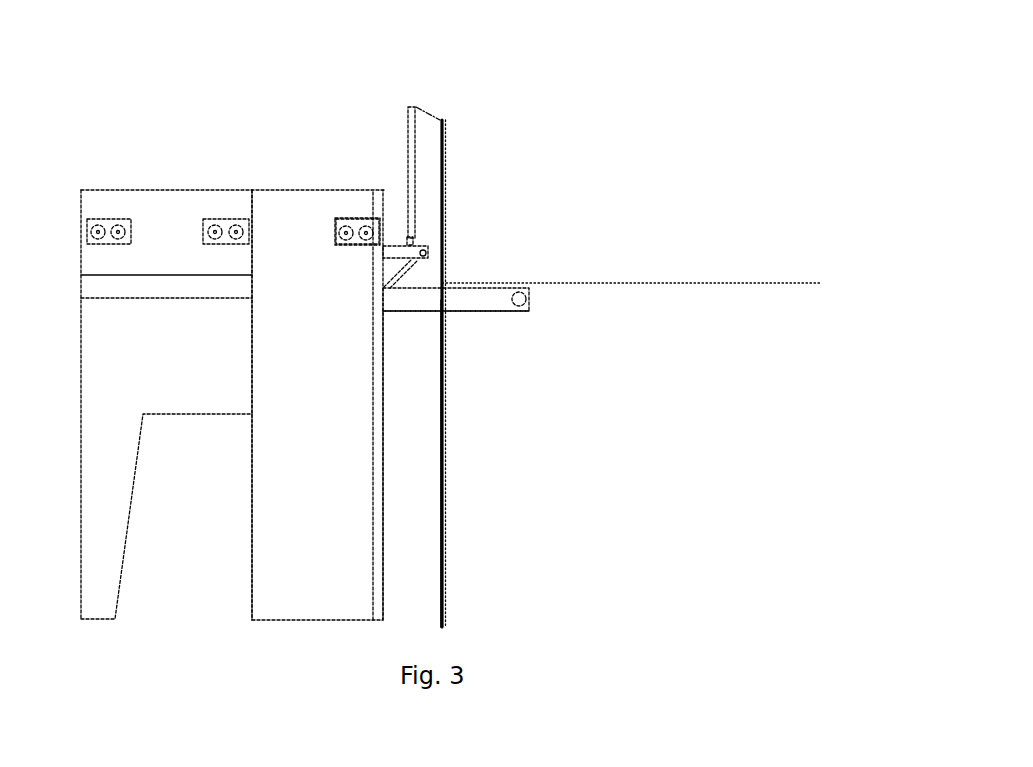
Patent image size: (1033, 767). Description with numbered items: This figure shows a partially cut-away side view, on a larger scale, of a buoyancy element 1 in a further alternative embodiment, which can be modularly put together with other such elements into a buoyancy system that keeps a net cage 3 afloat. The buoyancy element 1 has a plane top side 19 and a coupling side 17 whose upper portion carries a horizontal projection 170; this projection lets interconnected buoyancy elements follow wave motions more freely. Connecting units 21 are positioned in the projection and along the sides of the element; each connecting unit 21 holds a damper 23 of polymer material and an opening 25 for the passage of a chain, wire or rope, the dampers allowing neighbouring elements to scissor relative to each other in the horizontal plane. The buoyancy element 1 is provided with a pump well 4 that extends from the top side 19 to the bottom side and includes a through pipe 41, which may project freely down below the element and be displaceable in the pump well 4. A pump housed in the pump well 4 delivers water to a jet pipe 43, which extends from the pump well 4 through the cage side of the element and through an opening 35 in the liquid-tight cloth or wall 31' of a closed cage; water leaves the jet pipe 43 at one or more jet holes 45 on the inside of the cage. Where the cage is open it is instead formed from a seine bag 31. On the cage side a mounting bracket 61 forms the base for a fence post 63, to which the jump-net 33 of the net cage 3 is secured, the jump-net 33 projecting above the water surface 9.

The buoyancy element 1 is at (158, 162).
The top side 19 is at (232, 190).
The projection 170 is at (99, 262).
The coupling side 17 is at (142, 367).
The pump well 4 is at (320, 211).
The pipe 41 is at (322, 530).
The damper 23 is at (121, 222).
The opening 25 is at (97, 233).
The connecting unit 21 is at (357, 220).
The net cage 3 is at (442, 457).
The seine bag 31 is at (490, 463).
The liquid-tight cloth or wall 31' is at (493, 373).
The jump-net 33 is at (442, 175).
The fence post 63 is at (408, 128).
The mounting bracket 61 is at (430, 251).
The jet pipe 43 is at (482, 302).
The opening 35 is at (447, 313).
The jet holes 45 is at (523, 296).
The water surface 9 is at (747, 282).